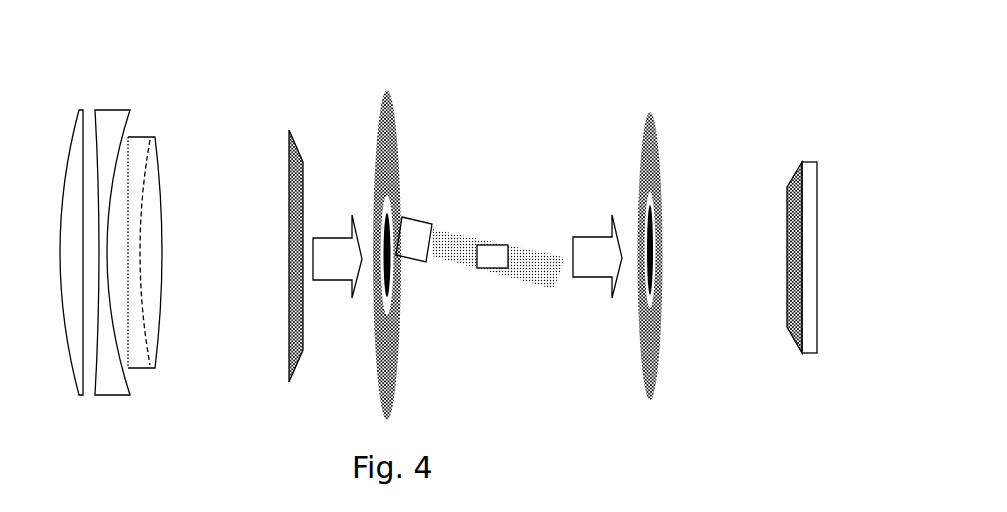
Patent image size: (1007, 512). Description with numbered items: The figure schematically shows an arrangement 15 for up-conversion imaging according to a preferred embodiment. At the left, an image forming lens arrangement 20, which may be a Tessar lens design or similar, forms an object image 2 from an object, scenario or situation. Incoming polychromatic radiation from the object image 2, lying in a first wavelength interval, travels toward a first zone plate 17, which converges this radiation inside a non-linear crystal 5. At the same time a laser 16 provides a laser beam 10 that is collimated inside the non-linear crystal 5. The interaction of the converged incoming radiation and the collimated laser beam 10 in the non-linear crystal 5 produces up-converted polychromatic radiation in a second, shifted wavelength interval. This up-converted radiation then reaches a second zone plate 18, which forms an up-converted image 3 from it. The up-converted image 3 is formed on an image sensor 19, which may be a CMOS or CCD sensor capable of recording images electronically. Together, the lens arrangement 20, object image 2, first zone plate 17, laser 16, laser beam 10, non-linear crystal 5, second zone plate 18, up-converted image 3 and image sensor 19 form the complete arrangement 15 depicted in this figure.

The arrangement 15 is at (267, 76).
The image forming lens arrangement 20 is at (111, 236).
The object image 2 is at (295, 146).
The first zone plate 17 is at (389, 240).
The laser 16 is at (418, 218).
The laser beam 10 is at (460, 241).
The non-linear crystal 5 is at (505, 245).
The second zone plate 18 is at (651, 239).
The up-converted image 3 is at (793, 180).
The image sensor 19 is at (810, 168).